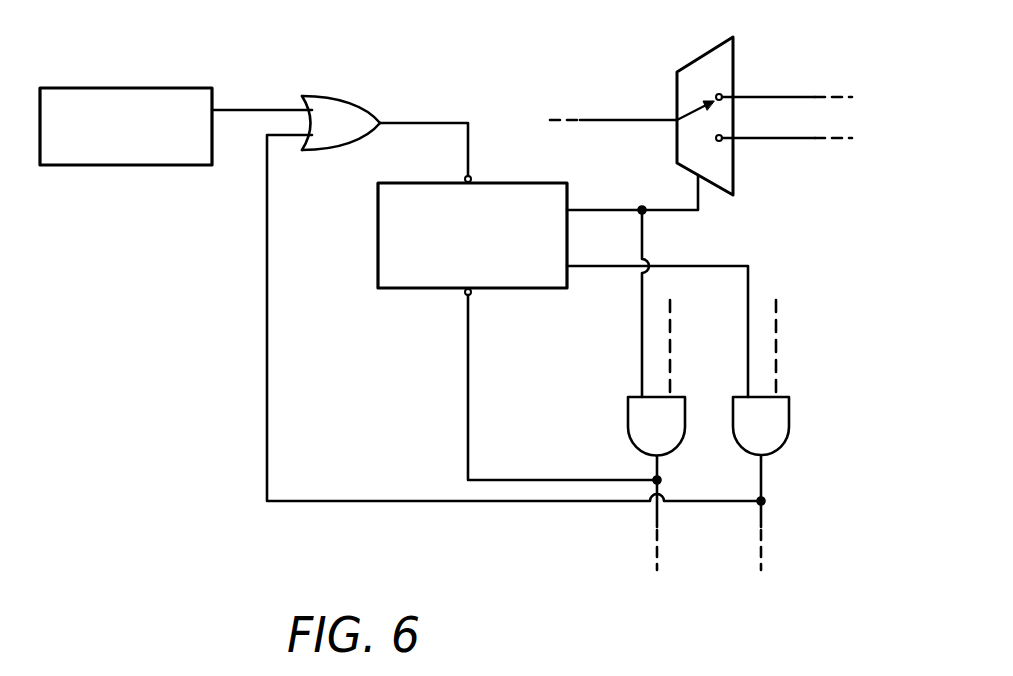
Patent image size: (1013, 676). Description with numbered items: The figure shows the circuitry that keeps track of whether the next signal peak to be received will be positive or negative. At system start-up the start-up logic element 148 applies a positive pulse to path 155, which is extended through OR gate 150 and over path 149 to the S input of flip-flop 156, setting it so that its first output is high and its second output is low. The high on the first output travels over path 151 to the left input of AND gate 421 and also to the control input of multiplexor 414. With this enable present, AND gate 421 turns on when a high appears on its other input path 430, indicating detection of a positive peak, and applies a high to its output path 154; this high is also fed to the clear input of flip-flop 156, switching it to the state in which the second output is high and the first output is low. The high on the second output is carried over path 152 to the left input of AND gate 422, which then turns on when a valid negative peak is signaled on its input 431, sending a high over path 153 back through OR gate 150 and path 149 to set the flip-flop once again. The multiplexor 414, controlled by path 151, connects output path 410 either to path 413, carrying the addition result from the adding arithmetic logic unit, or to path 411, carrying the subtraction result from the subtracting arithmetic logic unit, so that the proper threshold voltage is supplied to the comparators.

The start-up logic element 148 is at (135, 88).
The path 155 is at (284, 110).
The OR gate 150 is at (355, 98).
The path 149 is at (388, 122).
The flip-flop 156 is at (430, 275).
The output path 154 is at (468, 390).
The path 153 is at (267, 231).
The path 151 is at (636, 209).
The path 152 is at (613, 266).
The multiplexor 414 is at (707, 54).
The output path 410 is at (636, 120).
The path 413 is at (748, 97).
The path 411 is at (738, 138).
The input path 430 is at (672, 370).
The input 431 is at (777, 369).
The AND gate 421 is at (646, 432).
The AND gate 422 is at (772, 432).